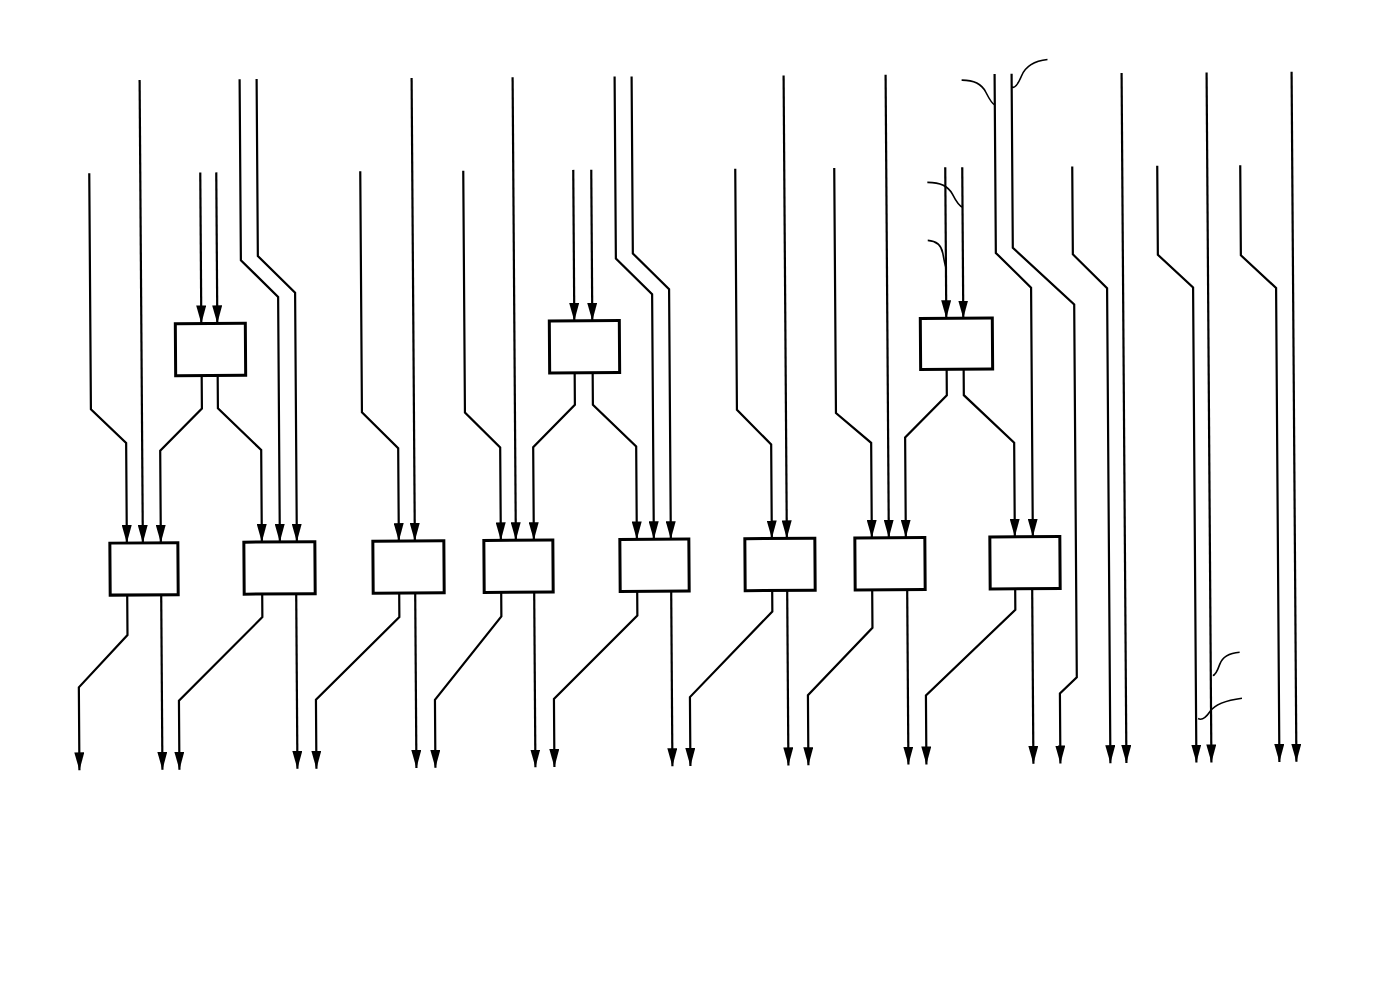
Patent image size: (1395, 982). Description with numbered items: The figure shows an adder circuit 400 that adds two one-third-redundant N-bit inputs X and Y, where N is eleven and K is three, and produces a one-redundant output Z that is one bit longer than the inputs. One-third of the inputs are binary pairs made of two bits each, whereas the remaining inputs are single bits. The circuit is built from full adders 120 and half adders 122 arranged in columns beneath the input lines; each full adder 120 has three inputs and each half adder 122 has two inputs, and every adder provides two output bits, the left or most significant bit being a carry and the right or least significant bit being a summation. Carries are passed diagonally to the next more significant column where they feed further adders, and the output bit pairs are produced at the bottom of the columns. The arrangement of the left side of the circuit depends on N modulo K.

The full adder 120 is at (924, 562).
The half adder 122 is at (993, 344).
The adder circuit 400 is at (722, 436).